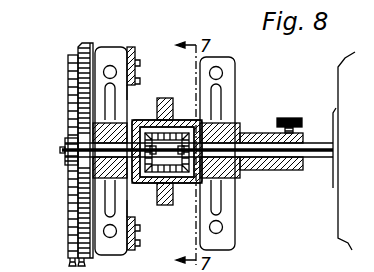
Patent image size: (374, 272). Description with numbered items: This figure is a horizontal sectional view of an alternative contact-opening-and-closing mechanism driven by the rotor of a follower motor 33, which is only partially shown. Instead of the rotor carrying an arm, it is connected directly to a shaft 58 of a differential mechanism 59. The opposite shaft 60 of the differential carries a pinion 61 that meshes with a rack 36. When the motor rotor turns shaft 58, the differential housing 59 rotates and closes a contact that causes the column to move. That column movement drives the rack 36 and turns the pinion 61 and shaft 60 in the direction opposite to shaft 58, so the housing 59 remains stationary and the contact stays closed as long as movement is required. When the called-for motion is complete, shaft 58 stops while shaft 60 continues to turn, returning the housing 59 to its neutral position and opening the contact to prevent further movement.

The rack 36 is at (85, 44).
The pinion 61 is at (68, 131).
The differential mechanism 59 is at (148, 120).
The differential shaft 60 is at (128, 186).
The differential shaft 58 is at (242, 143).
The follower motor 33 is at (346, 100).